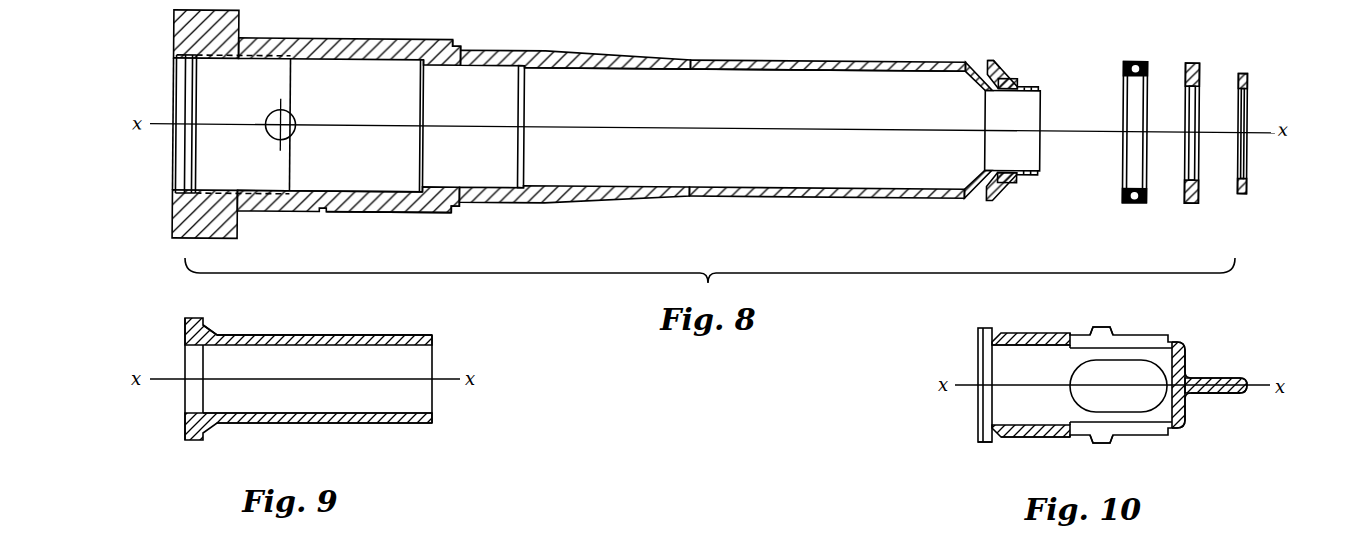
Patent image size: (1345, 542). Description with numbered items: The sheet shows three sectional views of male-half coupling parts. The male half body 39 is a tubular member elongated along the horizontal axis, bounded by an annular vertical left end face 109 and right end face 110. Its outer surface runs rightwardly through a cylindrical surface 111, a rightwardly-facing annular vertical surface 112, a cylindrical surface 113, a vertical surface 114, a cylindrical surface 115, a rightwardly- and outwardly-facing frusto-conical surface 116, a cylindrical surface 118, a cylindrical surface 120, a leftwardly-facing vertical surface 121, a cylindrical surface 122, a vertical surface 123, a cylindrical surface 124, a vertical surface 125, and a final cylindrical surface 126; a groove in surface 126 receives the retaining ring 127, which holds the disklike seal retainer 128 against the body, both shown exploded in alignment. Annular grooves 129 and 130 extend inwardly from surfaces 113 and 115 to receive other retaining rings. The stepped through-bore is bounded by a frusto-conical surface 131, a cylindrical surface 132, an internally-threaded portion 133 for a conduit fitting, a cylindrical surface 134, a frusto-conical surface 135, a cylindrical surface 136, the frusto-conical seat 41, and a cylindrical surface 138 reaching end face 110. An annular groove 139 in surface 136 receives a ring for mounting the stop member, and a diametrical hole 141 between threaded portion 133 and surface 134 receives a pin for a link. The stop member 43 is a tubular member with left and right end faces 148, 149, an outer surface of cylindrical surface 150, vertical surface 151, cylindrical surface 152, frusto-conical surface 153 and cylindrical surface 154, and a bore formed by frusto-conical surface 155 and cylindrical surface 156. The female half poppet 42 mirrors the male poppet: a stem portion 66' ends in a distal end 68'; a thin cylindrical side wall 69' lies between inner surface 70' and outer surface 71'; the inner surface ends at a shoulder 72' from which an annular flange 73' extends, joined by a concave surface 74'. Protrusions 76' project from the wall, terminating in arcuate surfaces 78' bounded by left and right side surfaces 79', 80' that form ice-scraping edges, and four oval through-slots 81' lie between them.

In FIG. 8, the body 39 is at (786, 99).
In FIG. 8, the seat 41 is at (943, 89).
In FIG. 8, the left end face 109 is at (168, 56).
In FIG. 8, the right end face 110 is at (1047, 130).
In FIG. 8, the horizontal cylindrical surface 111 is at (178, 227).
In FIG. 8, the rightwardly-facing annular vertical surface 112 is at (348, 219).
In FIG. 8, the horizontal cylindrical surface 113 is at (388, 234).
In FIG. 8, the rightwardly-facing annular vertical surface 114 is at (491, 225).
In FIG. 8, the horizontal cylindrical surface 115 is at (575, 36).
In FIG. 8, the frusto-conical surface 116 is at (574, 218).
In FIG. 8, the horizontal cylindrical surface 118 is at (827, 40).
In FIG. 8, the horizontal cylindrical surface 120 is at (957, 51).
In FIG. 8, the leftwardly-facing annular vertical surface 121 is at (1004, 40).
In FIG. 8, the horizontal cylindrical surface 122 is at (1019, 203).
In FIG. 8, the rightwardly-facing annular vertical surface 123 is at (1037, 61).
In FIG. 8, the horizontal cylindrical surface 124 is at (1039, 195).
In FIG. 8, the rightwardly-facing annular vertical surface 125 is at (1060, 71).
In FIG. 8, the horizontal cylindrical surface 126 is at (1060, 173).
In FIG. 8, the retaining ring 127 is at (1221, 151).
In FIG. 8, the seal retainer 128 is at (1266, 110).
In FIG. 8, the annular vertical groove 129 is at (349, 34).
In FIG. 8, the annular vertical groove 130 is at (434, 27).
In FIG. 8, the frusto-conical surface 131 is at (136, 130).
In FIG. 8, the horizontal cylindrical surface 132 is at (146, 125).
In FIG. 8, the internally-threaded portion 133 is at (242, 124).
In FIG. 8, the horizontal cylindrical surface 134 is at (329, 172).
In FIG. 8, the frusto-conical surface 135 is at (392, 125).
In FIG. 8, the horizontal cylindrical surface 136 is at (744, 90).
In FIG. 8, the horizontal cylindrical surface 138 is at (955, 169).
In FIG. 8, the annular groove 139 is at (486, 126).
In FIG. 8, the diametrical hole 141 is at (255, 130).
In FIG. 9, the stop member 43 is at (324, 310).
In FIG. 9, the left end face 148 is at (162, 386).
In FIG. 9, the right end face 149 is at (470, 386).
In FIG. 9, the horizontal cylindrical surface 150 is at (285, 319).
In FIG. 9, the rightwardly-facing annular vertical surface 151 is at (296, 451).
In FIG. 9, the horizontal cylindrical surface 152 is at (233, 314).
In FIG. 9, the frusto-conical surface 153 is at (324, 443).
In FIG. 9, the horizontal cylindrical surface 154 is at (333, 314).
In FIG. 9, the frusto-conical surface 155 is at (149, 379).
In FIG. 9, the horizontal cylindrical surface 156 is at (317, 399).
In FIG. 10, the female half poppet 42 is at (1128, 360).
In FIG. 10, the stem portion 66' is at (1243, 369).
In FIG. 10, the distal end 68' is at (1249, 411).
In FIG. 10, the cylindrical side wall 69' is at (1031, 417).
In FIG. 10, the inner cylindrical surface 70' is at (1031, 361).
In FIG. 10, the outer cylindrical surface 71' is at (1002, 458).
In FIG. 10, the annular vertical shoulder 72' is at (950, 435).
In FIG. 10, the annular flange 73' is at (942, 367).
In FIG. 10, the annular concave surface 74' is at (1010, 310).
In FIG. 10, the protrusions 76' is at (1158, 359).
In FIG. 10, the distal arcuate surface 78' is at (1082, 314).
In FIG. 10, the left side surface 79' is at (1137, 457).
In FIG. 10, the right side surface 80' is at (1059, 458).
In FIG. 10, the oval-shaped through-slots 81' is at (1148, 392).